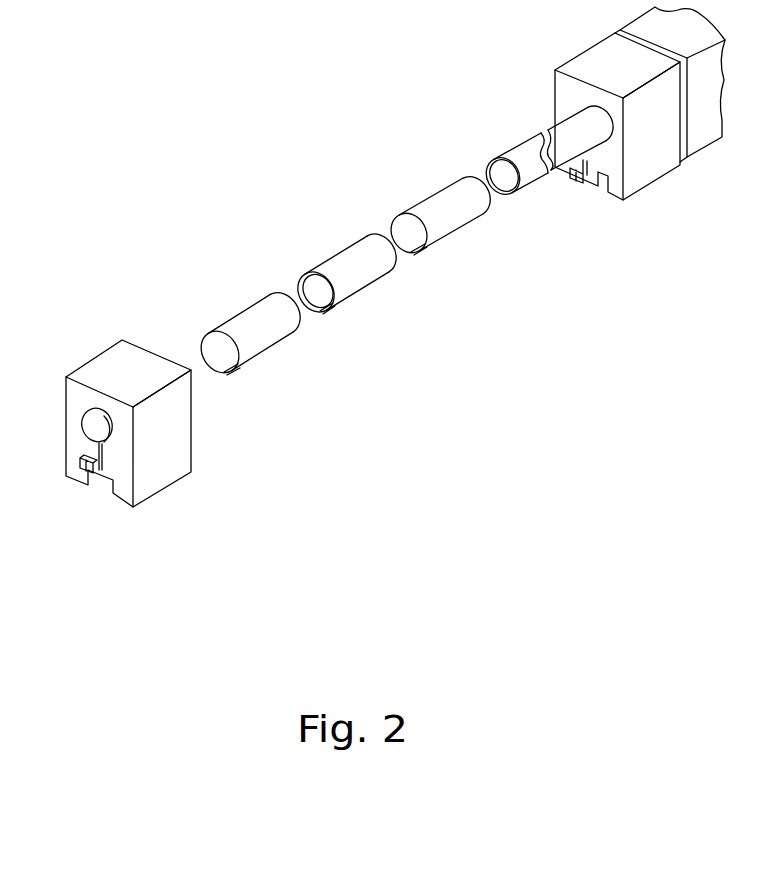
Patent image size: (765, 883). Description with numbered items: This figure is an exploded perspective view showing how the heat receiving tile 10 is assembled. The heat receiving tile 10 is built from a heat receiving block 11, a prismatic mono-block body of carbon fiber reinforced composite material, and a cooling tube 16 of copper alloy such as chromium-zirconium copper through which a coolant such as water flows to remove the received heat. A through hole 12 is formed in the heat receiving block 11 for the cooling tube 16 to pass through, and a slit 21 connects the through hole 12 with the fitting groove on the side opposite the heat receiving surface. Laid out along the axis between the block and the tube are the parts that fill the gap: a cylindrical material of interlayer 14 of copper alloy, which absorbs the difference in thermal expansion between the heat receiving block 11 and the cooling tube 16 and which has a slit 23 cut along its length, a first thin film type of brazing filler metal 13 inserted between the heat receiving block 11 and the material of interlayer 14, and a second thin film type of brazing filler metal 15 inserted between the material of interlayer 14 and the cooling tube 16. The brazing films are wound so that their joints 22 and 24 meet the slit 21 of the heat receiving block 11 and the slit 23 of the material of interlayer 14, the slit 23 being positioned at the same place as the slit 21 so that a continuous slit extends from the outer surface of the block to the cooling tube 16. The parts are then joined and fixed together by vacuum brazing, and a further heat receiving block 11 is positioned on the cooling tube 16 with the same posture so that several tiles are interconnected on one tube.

The heat receiving tile 10 is at (370, 270).
The heat receiving block 11 is at (121, 436).
The through hole 12 is at (93, 427).
The first thin film type of brazing filler metal 13 is at (246, 346).
The cylindrical material of interlayer 14 is at (344, 289).
The second thin film type of brazing filler metal 15 is at (437, 229).
The cooling tube 16 is at (511, 144).
The slit 21 is at (101, 478).
The joint 22 is at (214, 378).
The slit 23 is at (316, 314).
The joint 24 is at (407, 258).